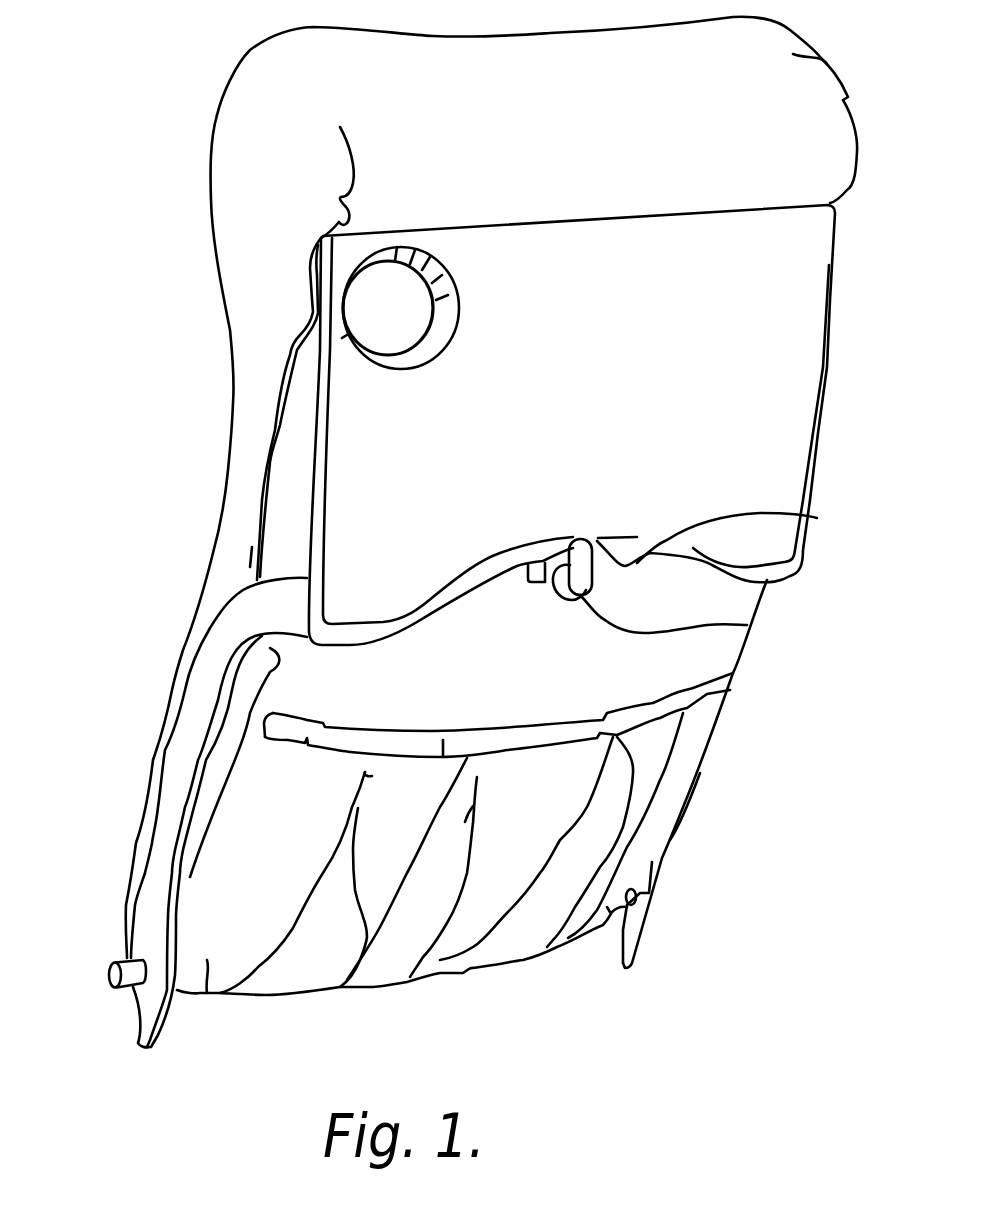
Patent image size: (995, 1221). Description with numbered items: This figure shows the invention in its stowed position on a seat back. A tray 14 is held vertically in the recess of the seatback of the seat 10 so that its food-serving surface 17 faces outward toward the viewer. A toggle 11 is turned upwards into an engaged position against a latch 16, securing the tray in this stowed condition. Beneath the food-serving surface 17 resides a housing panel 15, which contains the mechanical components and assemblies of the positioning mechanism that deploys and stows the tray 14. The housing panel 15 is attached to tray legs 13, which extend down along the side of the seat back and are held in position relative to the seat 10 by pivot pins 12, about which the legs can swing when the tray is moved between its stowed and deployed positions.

The seat 10 is at (217, 115).
The toggle 11 is at (747, 625).
The pivot pins 12 is at (112, 978).
The tray legs 13 is at (163, 805).
The tray 14 is at (817, 470).
The housing panel 15 is at (290, 443).
The latch 16 is at (817, 518).
The food-serving surface 17 is at (737, 325).